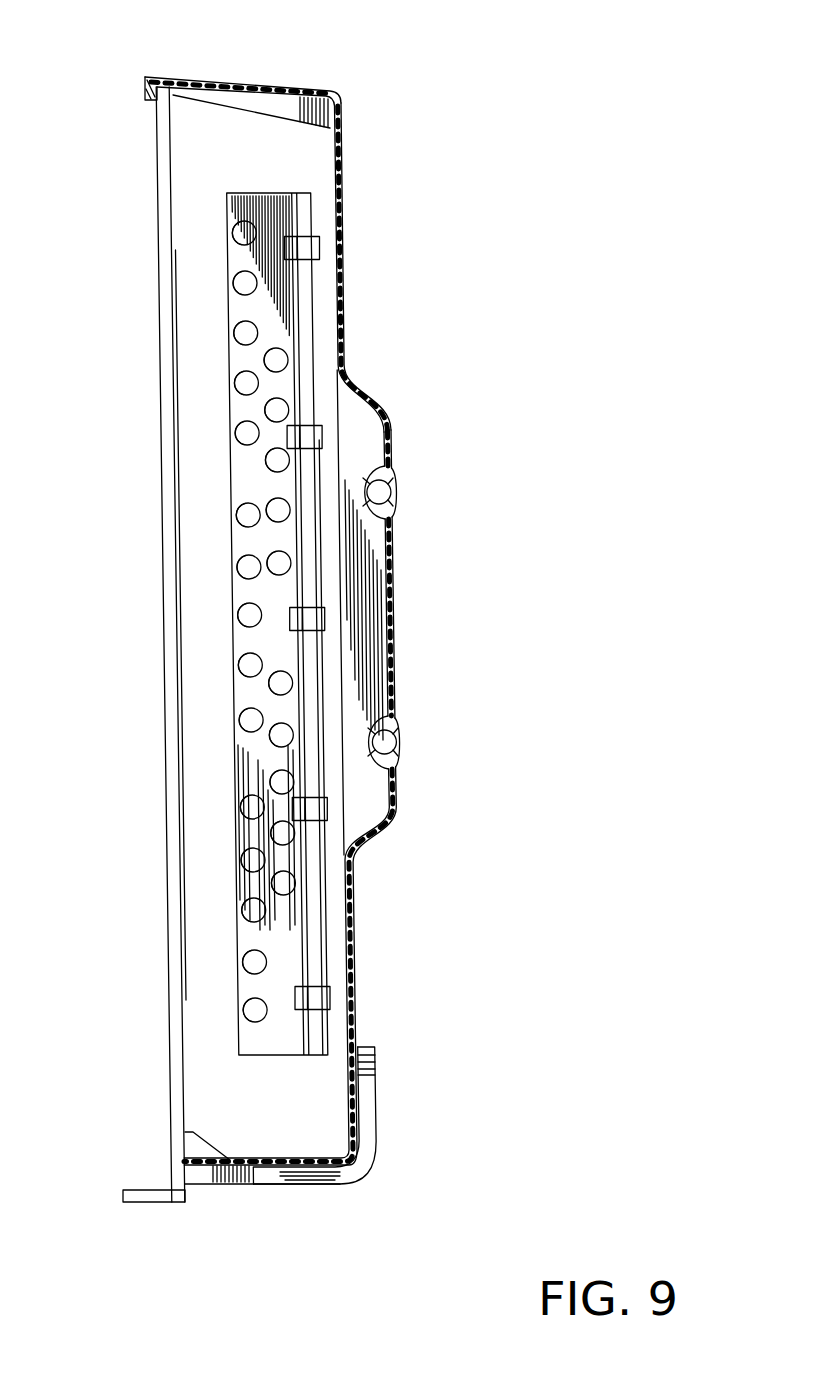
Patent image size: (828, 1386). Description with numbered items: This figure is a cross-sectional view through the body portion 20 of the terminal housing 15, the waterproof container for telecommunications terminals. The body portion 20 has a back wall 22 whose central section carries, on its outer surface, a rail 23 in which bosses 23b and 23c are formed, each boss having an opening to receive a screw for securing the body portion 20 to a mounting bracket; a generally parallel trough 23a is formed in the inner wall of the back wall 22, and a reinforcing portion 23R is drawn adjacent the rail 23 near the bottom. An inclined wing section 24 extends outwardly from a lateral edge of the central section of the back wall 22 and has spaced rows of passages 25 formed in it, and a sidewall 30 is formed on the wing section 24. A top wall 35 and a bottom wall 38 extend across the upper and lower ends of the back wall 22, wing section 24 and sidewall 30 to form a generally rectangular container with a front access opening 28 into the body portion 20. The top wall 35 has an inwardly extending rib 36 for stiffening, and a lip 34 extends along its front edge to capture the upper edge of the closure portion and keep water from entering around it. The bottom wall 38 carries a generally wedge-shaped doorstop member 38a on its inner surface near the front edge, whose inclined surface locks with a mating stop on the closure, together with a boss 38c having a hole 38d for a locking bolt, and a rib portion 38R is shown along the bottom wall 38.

The terminal housing 15 is at (195, 644).
The body portion 20 is at (295, 638).
The back wall 22 is at (341, 290).
The rail 23 is at (351, 797).
The trough 23a is at (358, 573).
The boss 23b is at (397, 490).
The boss 23c is at (398, 738).
The reinforcing flange 23R is at (372, 1047).
The inclined wing section 24 is at (323, 345).
The passages 25 is at (247, 384).
The front access opening 28 is at (187, 308).
The sidewall 30 is at (203, 707).
The lip 34 is at (150, 88).
The top wall 35 is at (206, 85).
The rib 36 is at (327, 113).
The bottom wall 38 is at (264, 1180).
The doorstop member 38a is at (195, 1143).
The boss 38c is at (247, 1187).
The hole 38d is at (200, 1192).
The reinforcing rib 38R is at (300, 1183).